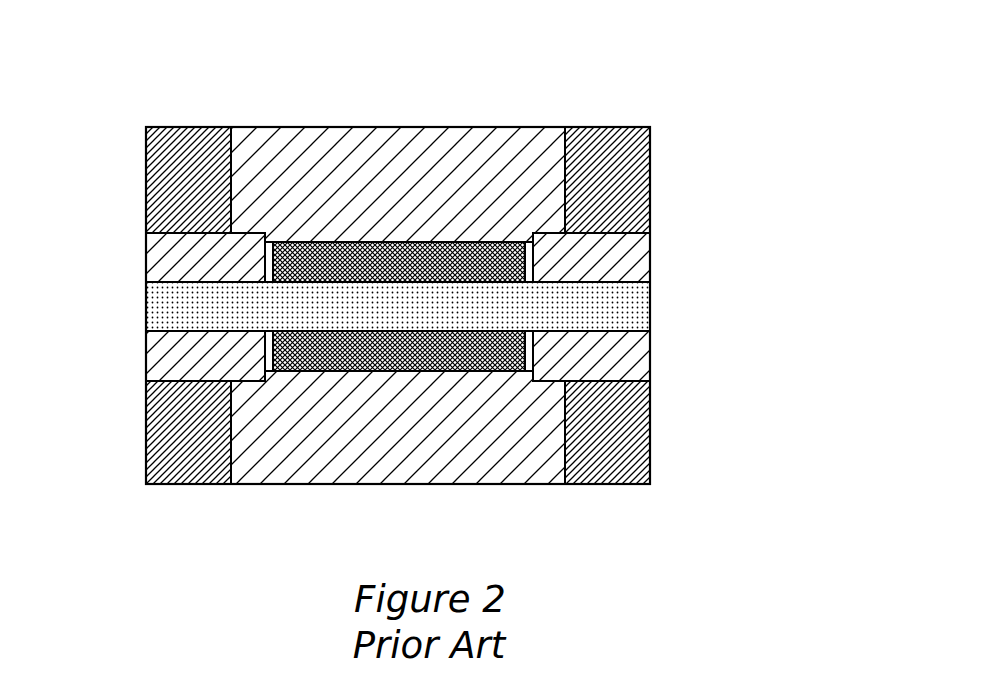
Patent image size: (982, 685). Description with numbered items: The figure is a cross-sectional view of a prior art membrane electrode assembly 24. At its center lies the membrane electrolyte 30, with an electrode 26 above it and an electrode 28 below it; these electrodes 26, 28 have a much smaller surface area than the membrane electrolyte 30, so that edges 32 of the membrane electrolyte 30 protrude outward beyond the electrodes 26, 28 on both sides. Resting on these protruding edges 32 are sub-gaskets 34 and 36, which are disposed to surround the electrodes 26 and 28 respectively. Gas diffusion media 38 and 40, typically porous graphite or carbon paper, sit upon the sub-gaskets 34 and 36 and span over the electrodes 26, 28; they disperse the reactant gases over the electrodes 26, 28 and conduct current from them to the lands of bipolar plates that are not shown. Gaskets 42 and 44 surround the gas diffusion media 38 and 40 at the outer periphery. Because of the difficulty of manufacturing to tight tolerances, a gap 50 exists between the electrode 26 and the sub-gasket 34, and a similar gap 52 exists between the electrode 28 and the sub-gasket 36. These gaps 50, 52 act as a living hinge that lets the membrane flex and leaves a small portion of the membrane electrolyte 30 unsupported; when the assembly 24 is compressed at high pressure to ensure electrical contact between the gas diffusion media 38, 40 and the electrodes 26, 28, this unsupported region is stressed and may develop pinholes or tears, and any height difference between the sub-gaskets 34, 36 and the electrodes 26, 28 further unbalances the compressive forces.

The prior art membrane electrode assembly 24 is at (720, 140).
The electrode 26 is at (434, 240).
The electrode 28 is at (318, 358).
The membrane electrolyte 30 is at (645, 310).
The edges of the membrane electrolyte 32 is at (168, 282).
The sub-gasket 34 is at (157, 250).
The sub-gasket 36 is at (155, 365).
The gas diffusion medium 38 is at (333, 147).
The gas diffusion medium 40 is at (433, 472).
The gasket 42 is at (190, 165).
The gasket 44 is at (157, 460).
The gap 50 is at (265, 257).
The gap 52 is at (233, 383).